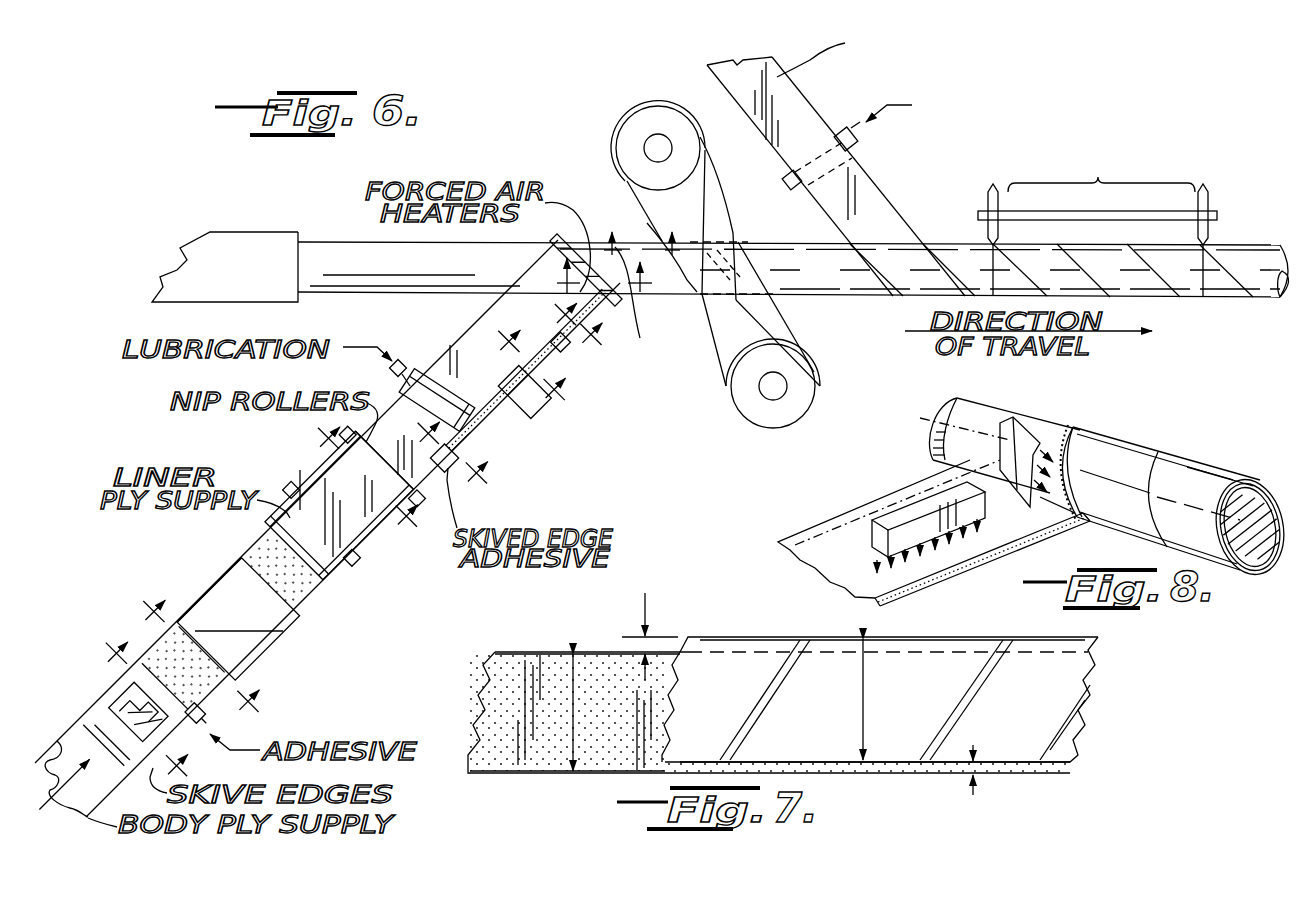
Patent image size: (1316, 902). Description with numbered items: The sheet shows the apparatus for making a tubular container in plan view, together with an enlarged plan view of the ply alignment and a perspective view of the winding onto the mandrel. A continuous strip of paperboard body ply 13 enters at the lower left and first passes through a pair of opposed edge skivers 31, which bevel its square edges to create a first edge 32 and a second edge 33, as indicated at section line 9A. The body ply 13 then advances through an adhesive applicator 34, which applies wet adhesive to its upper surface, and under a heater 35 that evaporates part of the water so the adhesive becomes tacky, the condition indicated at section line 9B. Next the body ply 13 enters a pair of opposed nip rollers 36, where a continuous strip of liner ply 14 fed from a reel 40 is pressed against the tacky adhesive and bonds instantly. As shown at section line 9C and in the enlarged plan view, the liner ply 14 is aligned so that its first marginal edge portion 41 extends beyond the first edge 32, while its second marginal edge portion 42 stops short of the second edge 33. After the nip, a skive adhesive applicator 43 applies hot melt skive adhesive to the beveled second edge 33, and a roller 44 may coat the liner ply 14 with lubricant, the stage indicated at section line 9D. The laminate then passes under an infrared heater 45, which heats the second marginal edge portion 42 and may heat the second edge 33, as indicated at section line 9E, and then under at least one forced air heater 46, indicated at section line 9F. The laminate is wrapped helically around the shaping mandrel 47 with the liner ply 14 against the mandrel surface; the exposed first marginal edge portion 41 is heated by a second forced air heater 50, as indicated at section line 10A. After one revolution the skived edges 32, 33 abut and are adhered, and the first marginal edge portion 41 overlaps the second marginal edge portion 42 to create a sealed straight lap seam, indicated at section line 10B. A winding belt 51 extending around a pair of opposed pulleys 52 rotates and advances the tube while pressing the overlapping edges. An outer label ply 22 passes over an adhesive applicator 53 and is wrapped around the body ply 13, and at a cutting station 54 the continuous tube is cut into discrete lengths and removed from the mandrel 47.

In FIG. 6, the body ply 13 is at (75, 762).
In FIG. 7, the body ply 13 is at (507, 713).
In FIG. 8, the body ply 13 is at (1150, 448).
In FIG. 6, the liner ply 14 is at (348, 557).
In FIG. 7, the liner ply 14 is at (1086, 708).
In FIG. 8, the liner ply 14 is at (810, 543).
In FIG. 6, the label ply 22 is at (872, 187).
In FIG. 6, the edge skivers 31 is at (103, 700).
In FIG. 6, the first edge 32 is at (157, 643).
In FIG. 7, the first edge 32 is at (512, 651).
In FIG. 8, the first edge 32 is at (1067, 430).
In FIG. 6, the second edge 33 is at (213, 697).
In FIG. 7, the second edge 33 is at (532, 777).
In FIG. 8, the second edge 33 is at (1007, 537).
In FIG. 6, the adhesive applicator 34 is at (247, 632).
In FIG. 6, the heater 35 is at (233, 588).
In FIG. 6, the nip rollers 36 is at (327, 455).
In FIG. 6, the reel 40 is at (279, 530).
In FIG. 6, the first marginal edge portion 41 is at (452, 350).
In FIG. 7, the first marginal edge portion 41 is at (957, 641).
In FIG. 8, the first marginal edge portion 41 is at (1055, 433).
In FIG. 6, the second marginal edge portion 42 is at (524, 412).
In FIG. 7, the second marginal edge portion 42 is at (1045, 776).
In FIG. 8, the second marginal edge portion 42 is at (943, 567).
In FIG. 6, the skive adhesive applicator 43 is at (455, 455).
In FIG. 6, the roller 44 is at (413, 390).
In FIG. 6, the infrared heater 45 is at (517, 410).
In FIG. 6, the forced air heater 46 is at (572, 366).
In FIG. 8, the forced air heater 46 is at (920, 507).
In FIG. 6, the shaping mandrel 47 is at (330, 258).
In FIG. 8, the shaping mandrel 47 is at (950, 447).
In FIG. 6, the second forced air heater 50 is at (620, 302).
In FIG. 8, the second forced air heater 50 is at (1025, 433).
In FIG. 6, the winding belt 51 is at (727, 210).
In FIG. 6, the pulleys 52 is at (642, 125).
In FIG. 6, the adhesive applicator 53 is at (843, 130).
In FIG. 6, the cutting station 54 is at (1207, 180).
In FIG. 6, the section line 9A is at (144, 709).
In FIG. 6, the section line 9B is at (192, 662).
In FIG. 6, the section line 9C is at (354, 493).
In FIG. 6, the section line 9D is at (443, 464).
In FIG. 6, the section line 9E is at (531, 368).
In FIG. 6, the section line 9F is at (570, 329).
In FIG. 6, the section line 10A is at (595, 270).
In FIG. 6, the section line 10B is at (720, 235).